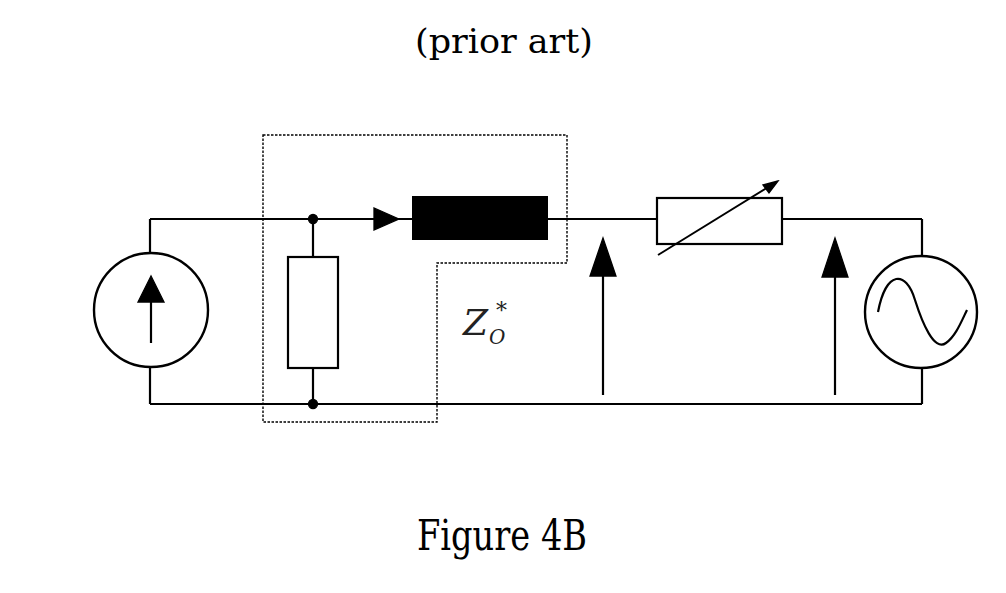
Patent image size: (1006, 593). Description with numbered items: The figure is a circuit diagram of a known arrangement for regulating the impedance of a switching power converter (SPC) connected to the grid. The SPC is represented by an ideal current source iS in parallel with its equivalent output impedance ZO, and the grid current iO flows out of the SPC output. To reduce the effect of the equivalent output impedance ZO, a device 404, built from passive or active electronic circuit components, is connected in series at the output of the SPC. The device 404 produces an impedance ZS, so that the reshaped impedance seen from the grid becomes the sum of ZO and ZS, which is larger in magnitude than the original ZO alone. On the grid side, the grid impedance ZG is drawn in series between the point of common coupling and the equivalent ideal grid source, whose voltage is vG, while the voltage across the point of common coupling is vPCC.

The device 404 is at (545, 220).
The inverter output current source i_S iS is at (124, 310).
The grid current iO is at (382, 196).
The equivalent SPC output impedance ZO is at (349, 312).
The impedance produced by the device ZS is at (480, 194).
The grid impedance ZG is at (719, 204).
The voltage across the PCC vPCC is at (648, 316).
The voltage of equivalent ideal grid source vG is at (807, 316).